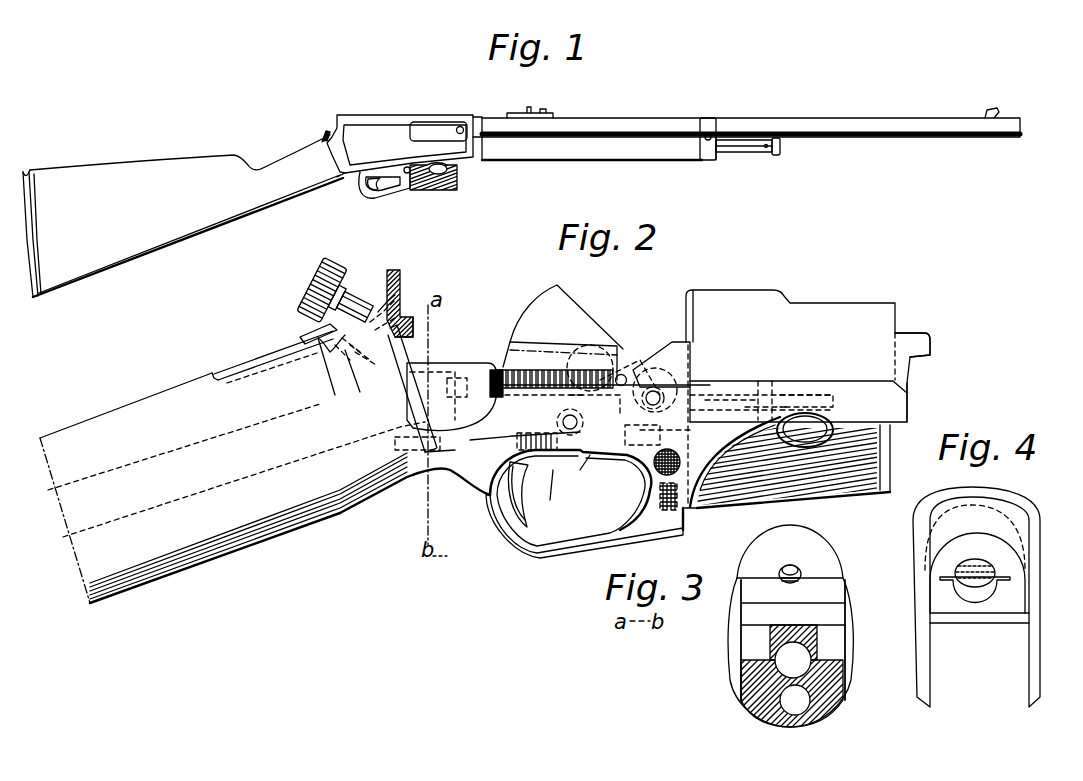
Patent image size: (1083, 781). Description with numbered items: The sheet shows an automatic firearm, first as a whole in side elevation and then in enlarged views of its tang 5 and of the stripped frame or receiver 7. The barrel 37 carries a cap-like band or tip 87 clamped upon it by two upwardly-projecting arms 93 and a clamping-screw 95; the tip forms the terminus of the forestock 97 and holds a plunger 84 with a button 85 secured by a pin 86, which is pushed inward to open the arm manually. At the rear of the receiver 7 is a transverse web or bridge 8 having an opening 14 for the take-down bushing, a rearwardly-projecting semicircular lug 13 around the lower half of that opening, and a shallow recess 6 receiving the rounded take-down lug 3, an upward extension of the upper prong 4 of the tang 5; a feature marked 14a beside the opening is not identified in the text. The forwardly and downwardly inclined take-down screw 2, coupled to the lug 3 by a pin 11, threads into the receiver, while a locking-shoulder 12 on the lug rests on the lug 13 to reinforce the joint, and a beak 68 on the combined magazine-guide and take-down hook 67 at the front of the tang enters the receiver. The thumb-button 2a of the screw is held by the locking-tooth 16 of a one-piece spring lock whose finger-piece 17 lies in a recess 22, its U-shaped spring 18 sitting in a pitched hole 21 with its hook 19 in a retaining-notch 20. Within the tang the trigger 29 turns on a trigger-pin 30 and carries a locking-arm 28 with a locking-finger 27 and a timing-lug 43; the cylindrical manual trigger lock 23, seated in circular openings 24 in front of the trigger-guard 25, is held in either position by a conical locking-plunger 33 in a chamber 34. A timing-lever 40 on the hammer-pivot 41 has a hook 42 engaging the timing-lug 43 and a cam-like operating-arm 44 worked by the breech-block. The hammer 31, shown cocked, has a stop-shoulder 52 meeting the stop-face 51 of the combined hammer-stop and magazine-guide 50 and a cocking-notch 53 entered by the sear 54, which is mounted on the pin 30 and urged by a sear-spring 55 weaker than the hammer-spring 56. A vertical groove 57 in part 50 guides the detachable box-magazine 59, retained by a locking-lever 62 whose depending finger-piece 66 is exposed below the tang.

In FIG. 2, the take-down screw 2 is at (353, 293).
In FIG. 1, the thumb-button 2a is at (324, 136).
In FIG. 2, the thumb-button 2a is at (306, 286).
In FIG. 3, the take-down lug 3 is at (790, 551).
In FIG. 1, the upper prong 4 is at (288, 158).
In FIG. 2, the upper prong 4 is at (252, 366).
In FIG. 1, the tang 5 is at (336, 178).
In FIG. 2, the tang 5 is at (403, 414).
In FIG. 3, the tang 5 is at (742, 710).
In FIG. 4, the shallow recess 6 is at (990, 532).
In FIG. 1, the receiver 7 is at (400, 121).
In FIG. 4, the receiver 7 is at (976, 597).
In FIG. 2, the web or bridge 8 is at (397, 270).
In FIG. 4, the web or bridge 8 is at (977, 573).
In FIG. 2, the pin 11 is at (388, 298).
In FIG. 2, the locking-shoulder 12 is at (405, 318).
In FIG. 3, the locking-shoulder 12 is at (779, 578).
In FIG. 4, the semicircular lug 13 is at (998, 595).
In FIG. 4, the opening 14 is at (978, 585).
In FIG. 4, the recess 14a is at (982, 600).
In FIG. 2, the locking-tooth 16 is at (327, 352).
In FIG. 2, the finger-piece 17 is at (312, 333).
In FIG. 2, the U-shaped spring 18 is at (354, 355).
In FIG. 2, the hook 19 is at (330, 400).
In FIG. 2, the retaining-notch 20 is at (322, 392).
In FIG. 2, the chamber or hole 21 is at (352, 390).
In FIG. 2, the recess 22 is at (285, 370).
In FIG. 1, the manual safety or trigger lock 23 is at (407, 167).
In FIG. 2, the manual safety or trigger lock 23 is at (655, 466).
In FIG. 2, the circular openings 24 is at (682, 448).
In FIG. 1, the trigger-guard 25 is at (401, 190).
In FIG. 2, the trigger-guard 25 is at (578, 556).
In FIG. 2, the locking-finger 27 is at (745, 407).
In FIG. 2, the locking-arm 28 is at (595, 402).
In FIG. 1, the trigger 29 is at (364, 190).
In FIG. 2, the trigger 29 is at (537, 468).
In FIG. 2, the trigger-pin 30 is at (569, 430).
In FIG. 2, the hammer 31 is at (563, 338).
In FIG. 2, the locking-plunger 33 is at (660, 494).
In FIG. 2, the chamber 34 is at (686, 531).
In FIG. 1, the barrel 37 is at (738, 118).
In FIG. 2, the timing-lever 40 is at (694, 382).
In FIG. 2, the hammer-pivot 41 is at (653, 390).
In FIG. 2, the hook 42 is at (643, 438).
In FIG. 2, the timing-lug 43 is at (700, 421).
In FIG. 2, the operating-arm 44 is at (688, 384).
In FIG. 2, the combined hammer-stop and magazine-guide 50 is at (661, 364).
In FIG. 2, the stop-face 51 is at (662, 347).
In FIG. 2, the stop-shoulder 52 is at (623, 375).
In FIG. 2, the cocking-notch 53 is at (652, 433).
In FIG. 2, the sear 54 is at (580, 440).
In FIG. 2, the sear-spring 55 is at (515, 439).
In FIG. 2, the hammer-spring 56 is at (496, 370).
In FIG. 2, the vertical groove 57 is at (688, 293).
In FIG. 1, the box-magazine 59 is at (455, 185).
In FIG. 2, the box-magazine 59 is at (825, 313).
In FIG. 2, the locking-lever 62 is at (742, 423).
In FIG. 1, the finger-piece 66 is at (437, 192).
In FIG. 2, the finger-piece 66 is at (805, 430).
In FIG. 2, the combined magazine-guide and take-down hook 67 is at (900, 375).
In FIG. 2, the beak 68 is at (925, 346).
In FIG. 1, the plunger 84 is at (742, 152).
In FIG. 1, the button 85 is at (782, 150).
In FIG. 1, the pin 86 is at (766, 150).
In FIG. 1, the cap-like band or tip 87 is at (716, 160).
In FIG. 1, the arms 93 is at (700, 122).
In FIG. 1, the clamping-screw 95 is at (708, 134).
In FIG. 1, the forestock 97 is at (658, 160).